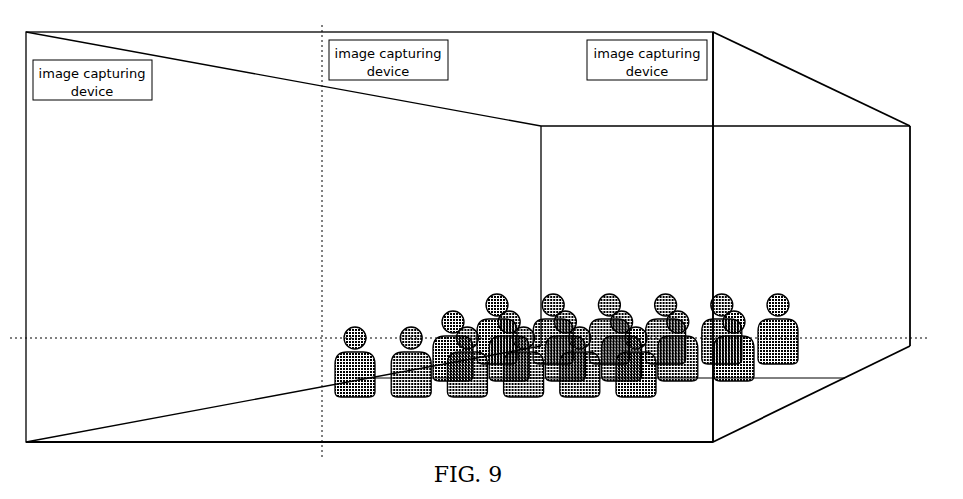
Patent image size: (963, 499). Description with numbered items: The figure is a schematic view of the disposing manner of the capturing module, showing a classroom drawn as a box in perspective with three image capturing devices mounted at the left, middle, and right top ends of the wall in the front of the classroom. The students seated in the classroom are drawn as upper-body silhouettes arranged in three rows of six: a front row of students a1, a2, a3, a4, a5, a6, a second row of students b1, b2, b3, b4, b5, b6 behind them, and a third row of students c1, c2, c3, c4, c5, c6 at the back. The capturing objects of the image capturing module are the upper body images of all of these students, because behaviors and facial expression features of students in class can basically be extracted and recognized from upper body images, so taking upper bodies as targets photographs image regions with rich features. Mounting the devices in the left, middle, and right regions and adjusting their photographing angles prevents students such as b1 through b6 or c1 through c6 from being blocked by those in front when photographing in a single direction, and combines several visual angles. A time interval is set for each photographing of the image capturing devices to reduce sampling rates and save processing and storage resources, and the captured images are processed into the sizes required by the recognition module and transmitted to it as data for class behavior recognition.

The audience member a1 (first row) a1 is at (355, 379).
The audience member a2 (first row) a2 is at (411, 379).
The audience member a3 (first row) a3 is at (467, 379).
The audience member a4 (first row) a4 is at (524, 379).
The audience member a5 (first row) a5 is at (580, 379).
The audience member a6 (first row) a6 is at (636, 379).
The audience member b1 (second row) b1 is at (453, 362).
The audience member b2 (second row) b2 is at (509, 362).
The audience member b3 (second row) b3 is at (565, 362).
The audience member b4 (second row) b4 is at (622, 362).
The audience member b5 (second row) b5 is at (678, 362).
The audience member b6 (second row) b6 is at (734, 362).
The audience member c1 (third row) c1 is at (497, 346).
The audience member c2 (third row) c2 is at (553, 346).
The audience member c3 (third row) c3 is at (609, 346).
The audience member c4 (third row) c4 is at (666, 346).
The audience member c5 (third row) c5 is at (722, 346).
The audience member c6 (third row) c6 is at (778, 346).